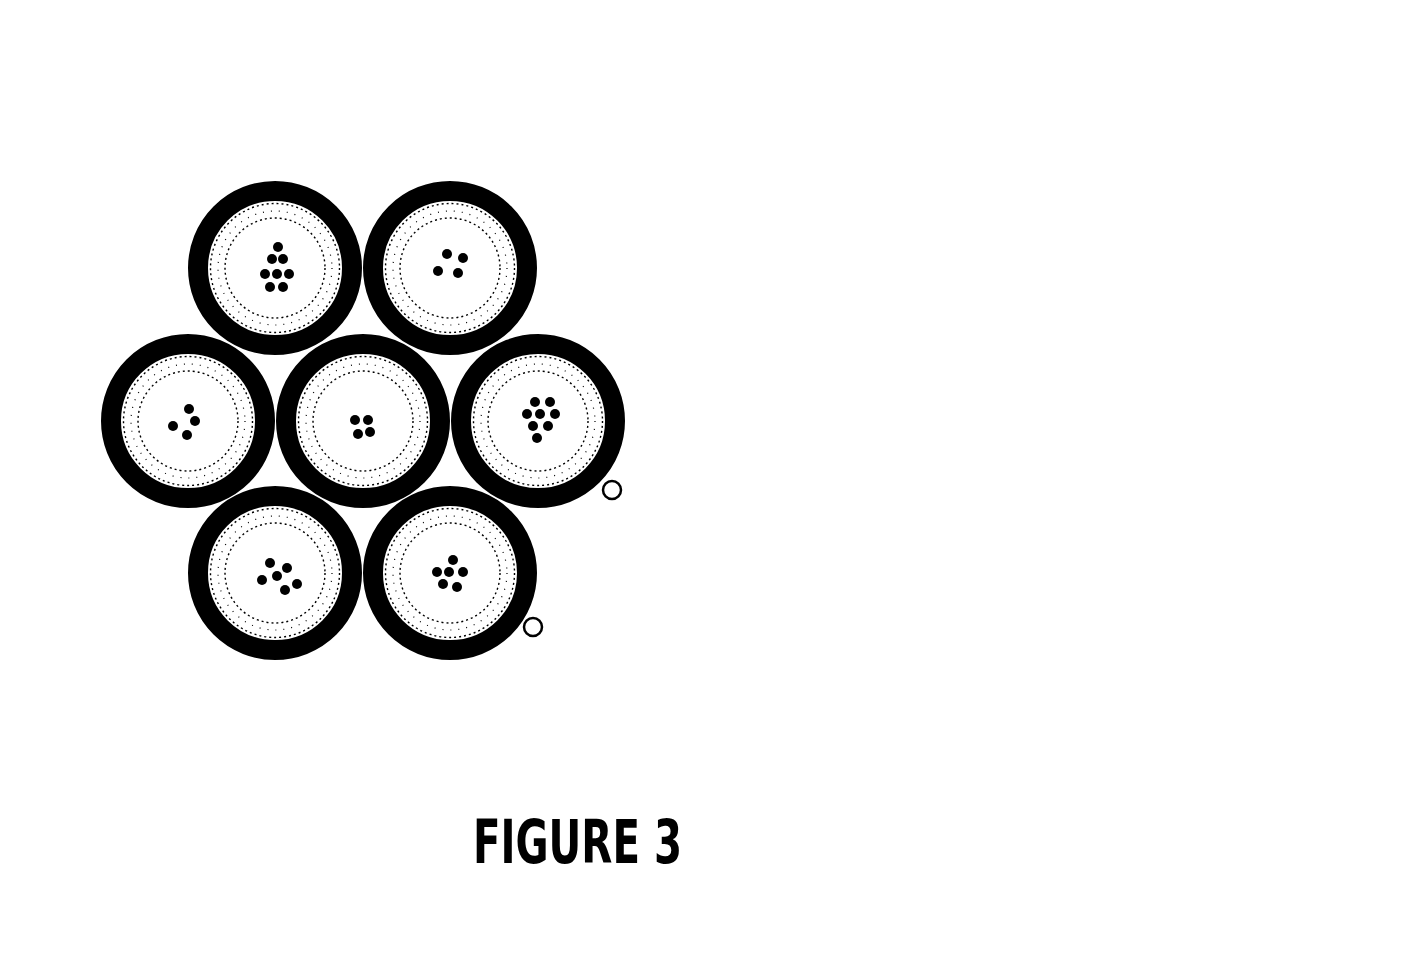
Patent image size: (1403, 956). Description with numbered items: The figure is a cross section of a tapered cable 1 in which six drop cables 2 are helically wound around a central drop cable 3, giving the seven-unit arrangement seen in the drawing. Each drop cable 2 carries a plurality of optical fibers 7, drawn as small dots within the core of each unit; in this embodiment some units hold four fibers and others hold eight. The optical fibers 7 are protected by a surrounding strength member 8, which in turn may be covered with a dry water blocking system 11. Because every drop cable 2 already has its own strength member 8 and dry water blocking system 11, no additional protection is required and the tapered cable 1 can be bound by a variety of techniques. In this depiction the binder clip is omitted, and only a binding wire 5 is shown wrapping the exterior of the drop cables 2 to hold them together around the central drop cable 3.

The tapered cable 1 is at (535, 238).
The drop cable 2 is at (213, 207).
The central drop cable 3 is at (743, 448).
The binding wire 5 is at (959, 611).
The optical fibers 7 is at (550, 418).
The strength member 8 is at (400, 450).
The dry water blocking system 11 is at (886, 596).